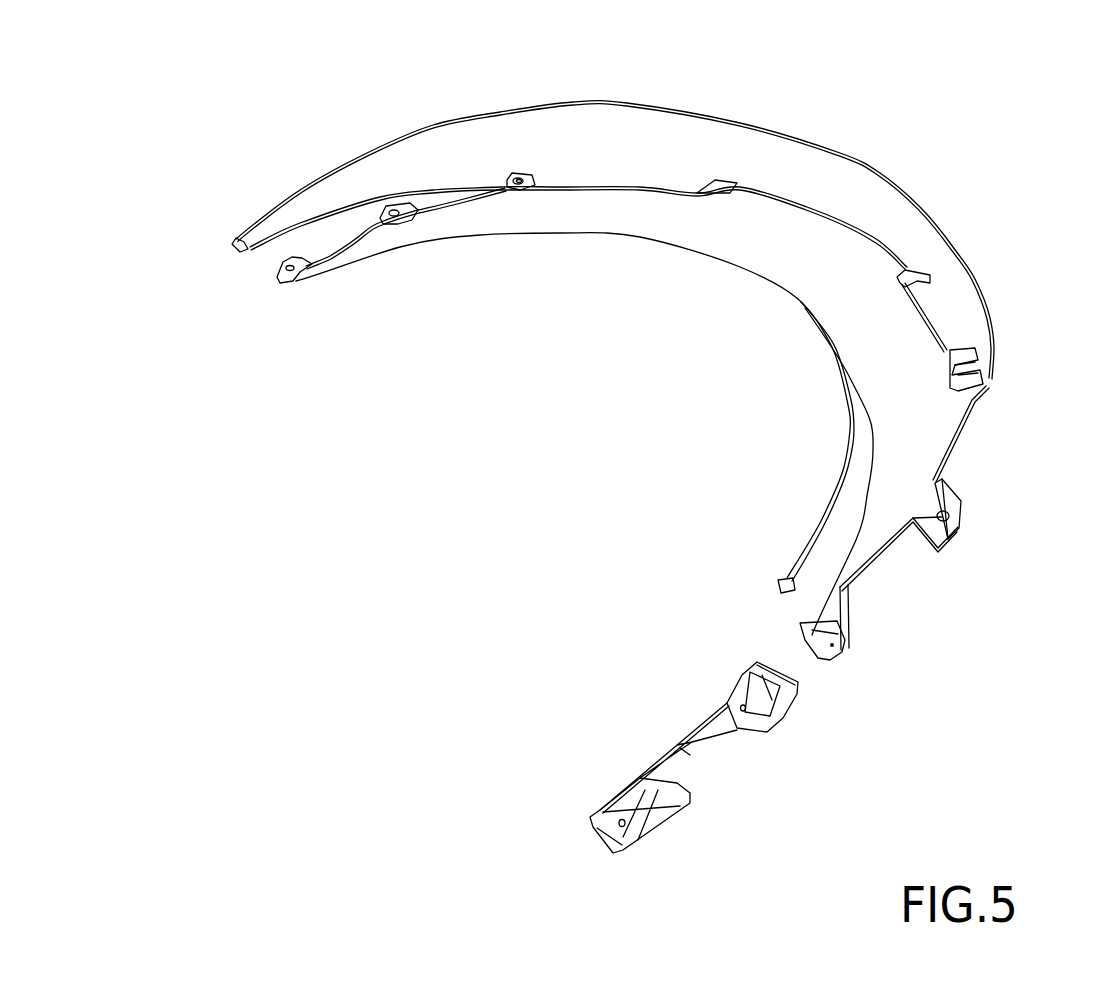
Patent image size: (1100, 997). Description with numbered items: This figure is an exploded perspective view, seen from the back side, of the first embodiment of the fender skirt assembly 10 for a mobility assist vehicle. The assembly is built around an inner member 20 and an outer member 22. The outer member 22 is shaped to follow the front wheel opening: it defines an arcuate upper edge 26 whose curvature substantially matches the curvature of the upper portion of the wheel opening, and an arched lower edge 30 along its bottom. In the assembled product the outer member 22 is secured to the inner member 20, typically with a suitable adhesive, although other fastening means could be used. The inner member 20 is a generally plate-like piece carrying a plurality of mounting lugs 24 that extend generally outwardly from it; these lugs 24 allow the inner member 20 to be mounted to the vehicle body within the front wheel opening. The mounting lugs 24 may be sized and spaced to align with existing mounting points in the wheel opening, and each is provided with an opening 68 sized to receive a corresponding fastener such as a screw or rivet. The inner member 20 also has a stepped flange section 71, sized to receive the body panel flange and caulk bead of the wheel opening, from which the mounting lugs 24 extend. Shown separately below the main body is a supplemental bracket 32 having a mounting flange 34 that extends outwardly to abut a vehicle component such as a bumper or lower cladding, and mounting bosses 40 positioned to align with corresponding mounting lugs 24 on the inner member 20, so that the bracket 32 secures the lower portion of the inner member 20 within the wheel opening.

The fender skirt assembly 10 is at (143, 116).
The inner member 20 is at (449, 254).
The outer member 22 is at (579, 98).
The mounting lugs 24 is at (518, 178).
The arcuate upper edge 26 is at (880, 176).
The arched lower edge 30 is at (847, 453).
The supplemental bracket 32 is at (660, 735).
The mounting flange 34 is at (691, 802).
The mounting bosses 40 is at (784, 710).
The openings 68 is at (520, 190).
The stepped flange section 71 is at (961, 505).